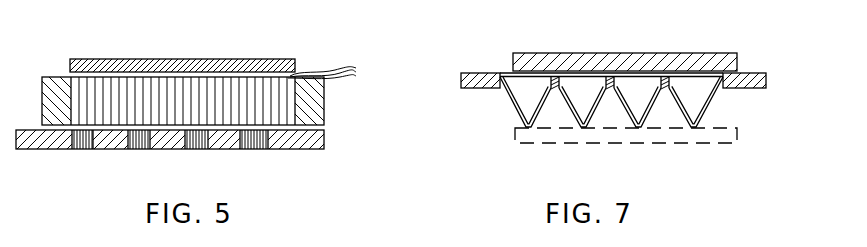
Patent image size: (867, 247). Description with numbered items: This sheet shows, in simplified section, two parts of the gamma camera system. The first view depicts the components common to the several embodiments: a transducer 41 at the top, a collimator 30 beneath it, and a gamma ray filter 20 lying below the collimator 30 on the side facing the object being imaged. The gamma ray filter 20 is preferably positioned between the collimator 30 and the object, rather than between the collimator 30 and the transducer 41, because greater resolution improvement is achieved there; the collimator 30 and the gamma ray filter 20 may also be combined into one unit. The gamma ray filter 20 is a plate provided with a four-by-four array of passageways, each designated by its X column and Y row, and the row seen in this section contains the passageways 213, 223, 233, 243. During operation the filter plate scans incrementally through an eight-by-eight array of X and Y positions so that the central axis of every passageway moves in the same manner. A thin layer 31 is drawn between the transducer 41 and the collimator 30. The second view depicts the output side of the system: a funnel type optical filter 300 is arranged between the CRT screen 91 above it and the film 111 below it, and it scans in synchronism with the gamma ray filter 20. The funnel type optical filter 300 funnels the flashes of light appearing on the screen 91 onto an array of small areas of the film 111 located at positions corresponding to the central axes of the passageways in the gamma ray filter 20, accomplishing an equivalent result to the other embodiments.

In FIG. 5, the transducer 41 is at (295, 62).
In FIG. 5, the thin film layer 31 is at (334, 71).
In FIG. 5, the collimator 30 is at (313, 98).
In FIG. 5, the gamma ray filter 20 is at (195, 156).
In FIG. 5, the passageway 213 is at (89, 150).
In FIG. 5, the passageway 223 is at (145, 150).
In FIG. 5, the passageway 233 is at (205, 150).
In FIG. 5, the passageway 243 is at (262, 150).
In FIG. 7, the CRT screen 91 is at (723, 53).
In FIG. 7, the funnel type optical filter 300 is at (712, 105).
In FIG. 7, the film 111 is at (717, 138).